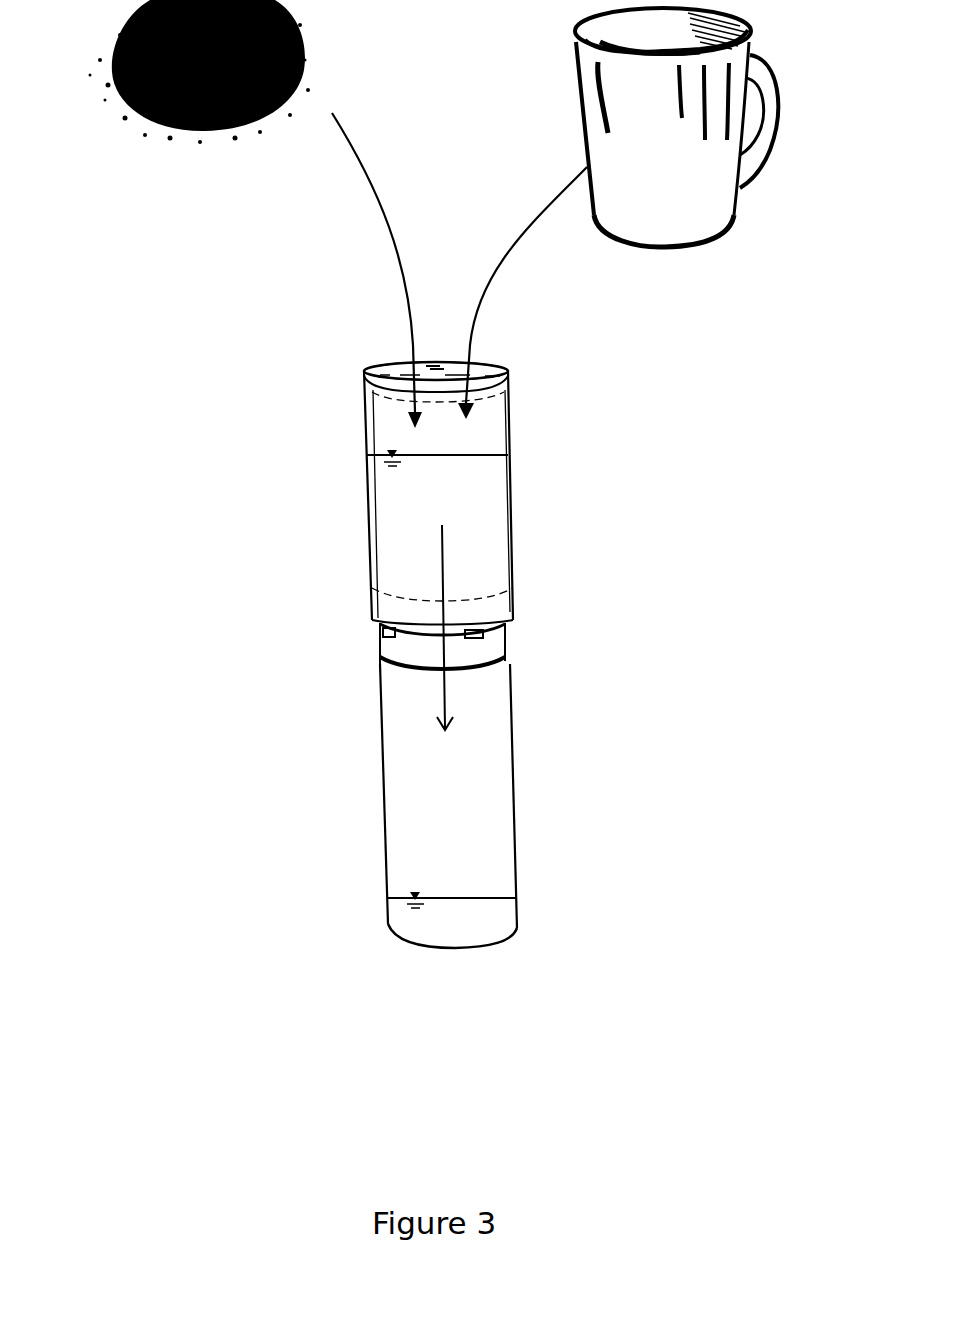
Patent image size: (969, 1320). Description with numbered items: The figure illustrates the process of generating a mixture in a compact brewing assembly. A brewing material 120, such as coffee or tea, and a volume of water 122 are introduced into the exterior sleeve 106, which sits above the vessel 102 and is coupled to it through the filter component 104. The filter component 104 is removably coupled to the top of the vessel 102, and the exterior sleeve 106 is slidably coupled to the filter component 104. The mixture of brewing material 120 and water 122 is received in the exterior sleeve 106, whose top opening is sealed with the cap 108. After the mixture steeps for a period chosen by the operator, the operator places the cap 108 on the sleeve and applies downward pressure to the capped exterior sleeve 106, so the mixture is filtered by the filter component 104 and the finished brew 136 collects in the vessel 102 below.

The vessel 102 is at (403, 776).
The filter component 104 is at (379, 648).
The exterior sleeve 106 is at (367, 505).
The cap 108 is at (474, 370).
The brewing material 120 is at (137, 97).
The water 122 is at (733, 201).
The finished brew 136 is at (402, 923).